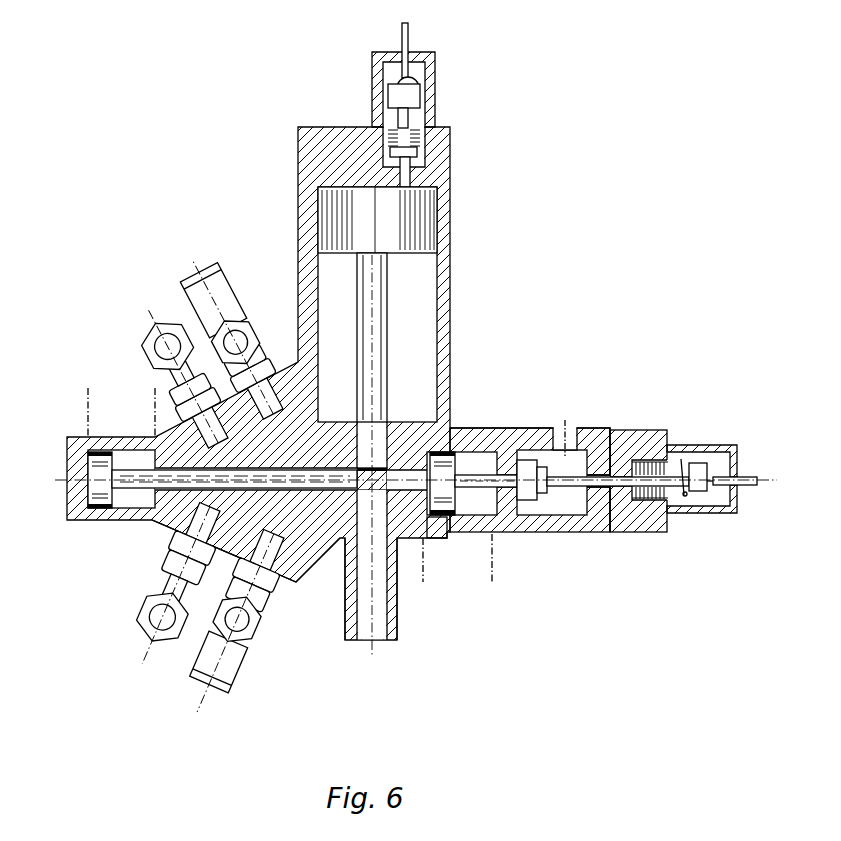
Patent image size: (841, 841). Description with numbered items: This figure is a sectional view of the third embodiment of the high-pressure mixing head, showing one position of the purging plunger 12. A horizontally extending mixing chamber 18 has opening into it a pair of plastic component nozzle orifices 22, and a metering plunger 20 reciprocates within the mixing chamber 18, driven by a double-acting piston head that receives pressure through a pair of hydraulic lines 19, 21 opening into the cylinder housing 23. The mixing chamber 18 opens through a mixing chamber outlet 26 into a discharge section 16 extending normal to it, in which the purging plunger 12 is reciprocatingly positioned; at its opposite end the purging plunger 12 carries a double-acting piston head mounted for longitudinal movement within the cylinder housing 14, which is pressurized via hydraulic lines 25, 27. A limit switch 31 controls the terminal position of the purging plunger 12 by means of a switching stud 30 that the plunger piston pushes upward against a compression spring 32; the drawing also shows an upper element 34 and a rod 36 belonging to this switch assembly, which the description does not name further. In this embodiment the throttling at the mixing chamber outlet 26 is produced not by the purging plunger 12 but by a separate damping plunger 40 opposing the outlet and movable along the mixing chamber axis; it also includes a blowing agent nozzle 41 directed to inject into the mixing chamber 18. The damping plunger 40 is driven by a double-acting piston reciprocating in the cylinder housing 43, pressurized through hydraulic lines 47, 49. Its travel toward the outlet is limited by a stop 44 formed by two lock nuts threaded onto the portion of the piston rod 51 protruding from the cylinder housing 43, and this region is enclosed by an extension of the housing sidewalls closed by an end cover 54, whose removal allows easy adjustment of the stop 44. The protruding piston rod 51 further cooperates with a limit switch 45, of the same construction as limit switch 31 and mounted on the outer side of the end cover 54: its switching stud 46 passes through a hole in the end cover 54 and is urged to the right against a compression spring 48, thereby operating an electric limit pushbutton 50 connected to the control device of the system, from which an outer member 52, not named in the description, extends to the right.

The purging plunger 12 is at (373, 330).
The cylinder housing 14 is at (444, 268).
The discharge section 16 is at (372, 600).
The mixing chamber 18 is at (336, 541).
The hydraulic line 19 is at (86, 404).
The metering plunger 20 is at (120, 515).
The hydraulic line 21 is at (152, 404).
The plastic component nozzle orifices 22 is at (283, 465).
The cylinder housing 23 is at (134, 512).
The hydraulic line 25 is at (466, 426).
The mixing chamber outlet 26 is at (348, 478).
The hydraulic line 27 is at (332, 180).
The switching stud 30 is at (437, 183).
The limit switch 31 is at (448, 80).
The compression spring 32 is at (410, 139).
The knob 34 is at (410, 92).
The actuating rod 36 is at (410, 33).
The damping plunger 40 is at (412, 540).
The blowing agent nozzle 41 is at (437, 455).
The cylinder housing 43 is at (478, 430).
The stop 44 is at (560, 534).
The limit switch 45 is at (681, 518).
The switching stud 46 is at (600, 517).
The hydraulic line 47 is at (423, 582).
The compression spring 48 is at (652, 533).
The hydraulic line 49 is at (492, 557).
The electric limit pushbutton 50 is at (707, 454).
The piston rod 51 is at (510, 470).
The switch rod 52 is at (746, 490).
The end cover 54 is at (606, 533).